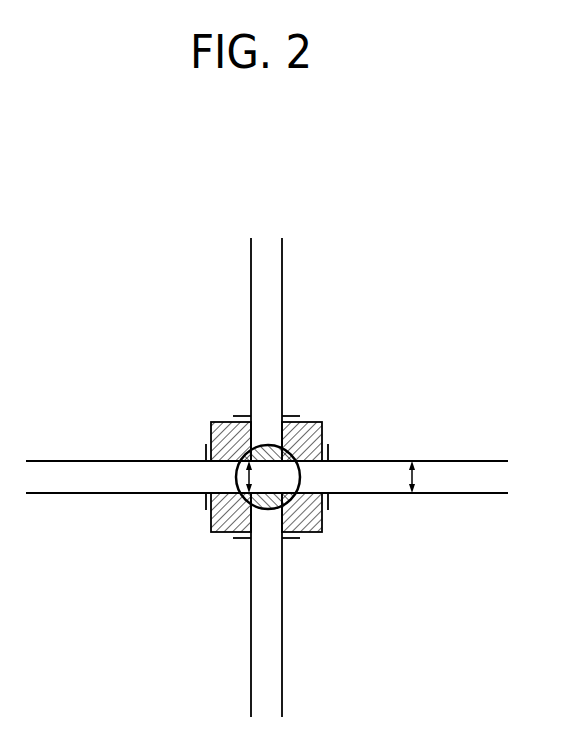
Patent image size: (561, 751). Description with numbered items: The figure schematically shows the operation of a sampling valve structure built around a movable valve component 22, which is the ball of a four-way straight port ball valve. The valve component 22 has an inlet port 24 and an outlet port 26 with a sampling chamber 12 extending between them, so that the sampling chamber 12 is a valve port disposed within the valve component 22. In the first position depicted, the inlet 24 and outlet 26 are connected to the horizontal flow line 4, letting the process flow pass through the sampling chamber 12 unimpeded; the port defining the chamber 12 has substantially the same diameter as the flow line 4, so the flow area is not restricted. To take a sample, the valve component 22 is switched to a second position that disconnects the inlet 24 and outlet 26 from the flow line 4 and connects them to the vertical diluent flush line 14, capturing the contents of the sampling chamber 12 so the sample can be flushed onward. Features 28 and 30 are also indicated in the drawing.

The flow line 4 is at (432, 461).
The sampling chamber 12 is at (268, 477).
The diluent flush line 14 is at (283, 297).
The movable valve component 22 is at (270, 447).
The inlet port 24 is at (298, 475).
The outlet port 26 is at (237, 486).
The electrode 28 is at (235, 476).
The channel width 30 is at (414, 477).